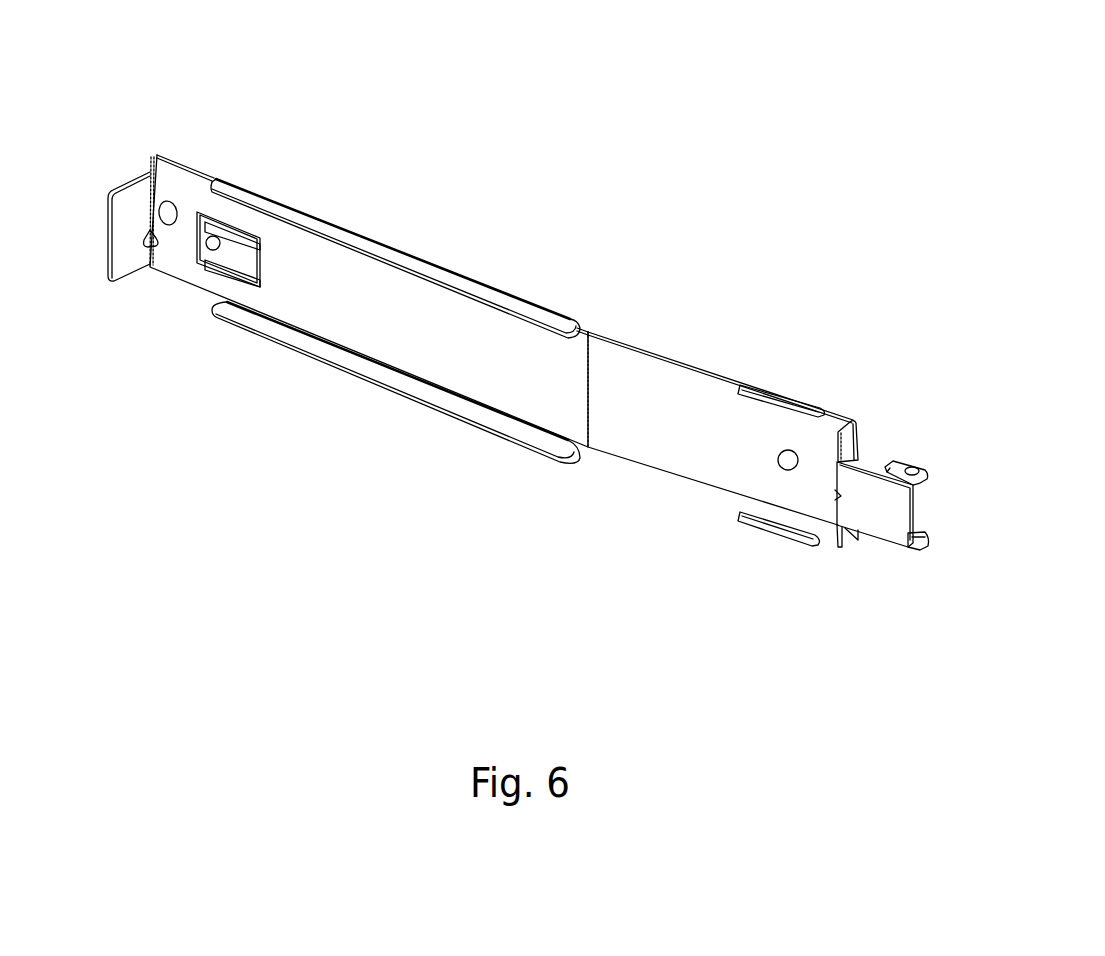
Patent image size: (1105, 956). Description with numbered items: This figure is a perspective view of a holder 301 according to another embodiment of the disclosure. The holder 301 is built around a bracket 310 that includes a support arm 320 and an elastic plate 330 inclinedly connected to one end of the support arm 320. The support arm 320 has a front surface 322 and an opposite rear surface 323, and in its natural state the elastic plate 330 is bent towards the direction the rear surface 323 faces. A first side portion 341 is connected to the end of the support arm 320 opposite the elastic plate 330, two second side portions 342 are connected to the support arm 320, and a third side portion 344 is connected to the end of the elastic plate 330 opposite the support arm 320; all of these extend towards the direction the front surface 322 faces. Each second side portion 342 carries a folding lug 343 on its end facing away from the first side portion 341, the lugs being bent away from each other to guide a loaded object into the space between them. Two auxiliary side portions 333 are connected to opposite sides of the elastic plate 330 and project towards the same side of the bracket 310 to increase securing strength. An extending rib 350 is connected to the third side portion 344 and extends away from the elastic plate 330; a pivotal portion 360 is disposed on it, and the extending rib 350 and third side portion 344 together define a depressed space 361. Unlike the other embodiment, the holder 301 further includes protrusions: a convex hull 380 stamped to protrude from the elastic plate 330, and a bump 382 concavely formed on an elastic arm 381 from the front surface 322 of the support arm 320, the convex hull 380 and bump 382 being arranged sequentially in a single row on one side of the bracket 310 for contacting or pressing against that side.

The holder 301 is at (942, 88).
The bracket 310 is at (748, 253).
The support arm 320 is at (587, 325).
The elastic plate 330 is at (668, 348).
The front surface 322 is at (320, 278).
The rear surface 323 is at (167, 157).
The first side portion 341 is at (122, 260).
The second side portion 342 is at (453, 280).
The folding lug 343 is at (563, 323).
The third side portion 344 is at (850, 437).
The auxiliary side portion 333 is at (773, 397).
The extending rib 350 is at (887, 517).
The pivotal portion 360 is at (920, 520).
The depressed space 361 is at (873, 443).
The convex hull 380 is at (788, 463).
The elastic arm 381 is at (227, 252).
The bump 382 is at (210, 245).